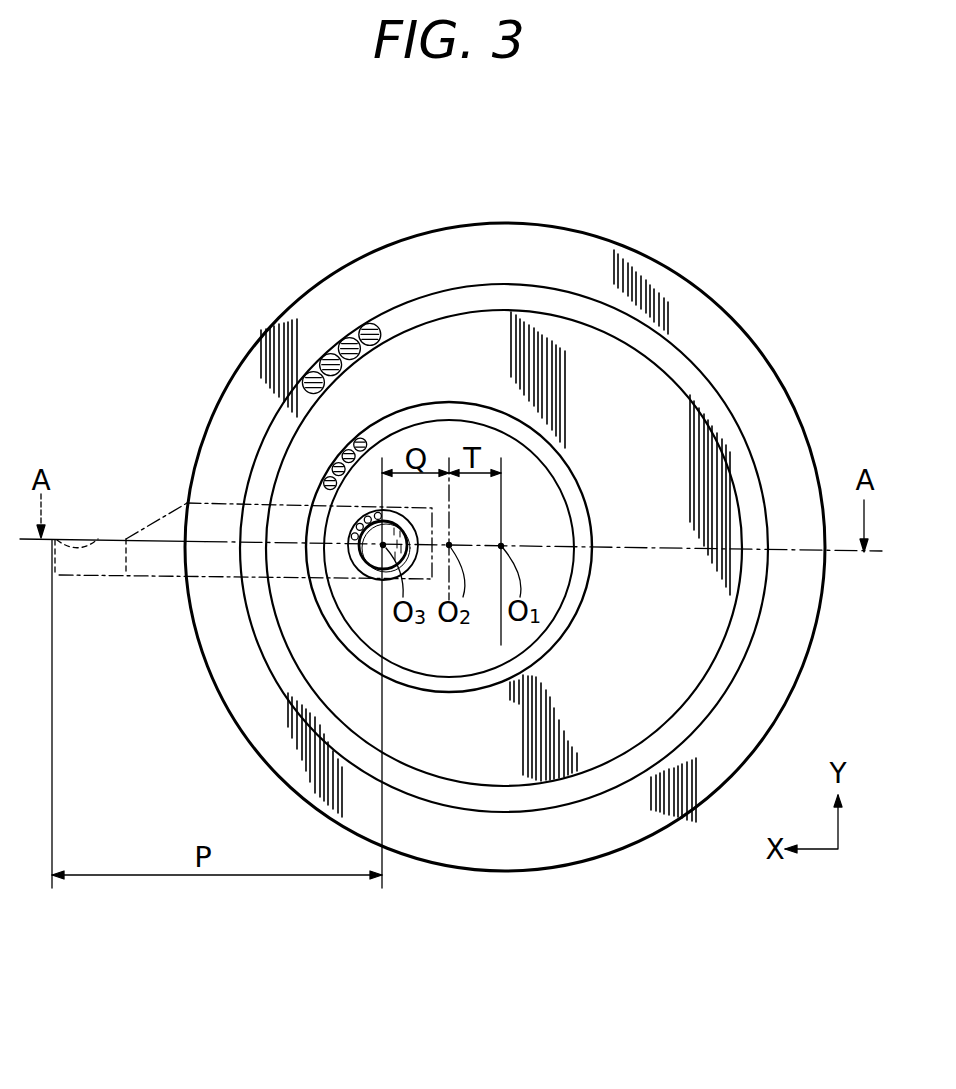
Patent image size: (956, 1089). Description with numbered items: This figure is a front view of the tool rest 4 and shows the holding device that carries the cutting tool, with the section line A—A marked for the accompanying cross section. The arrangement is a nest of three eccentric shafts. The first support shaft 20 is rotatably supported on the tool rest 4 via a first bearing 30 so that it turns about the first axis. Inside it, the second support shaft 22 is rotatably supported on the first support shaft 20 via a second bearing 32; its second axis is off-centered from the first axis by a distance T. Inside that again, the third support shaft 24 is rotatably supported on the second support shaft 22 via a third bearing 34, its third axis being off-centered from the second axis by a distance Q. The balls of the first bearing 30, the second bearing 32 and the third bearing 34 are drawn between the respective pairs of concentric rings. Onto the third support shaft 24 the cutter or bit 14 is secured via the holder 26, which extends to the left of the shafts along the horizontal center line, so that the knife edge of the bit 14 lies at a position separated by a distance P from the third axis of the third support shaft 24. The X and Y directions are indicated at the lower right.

The tool rest 4 is at (238, 383).
The cutter or bit 14 is at (78, 567).
The first support shaft 20 is at (627, 367).
The second support shaft 22 is at (462, 436).
The third support shaft 24 is at (372, 553).
The holder 26 is at (200, 573).
The first bearing 30 is at (345, 345).
The second bearing 32 is at (362, 441).
The third bearing 34 is at (371, 512).